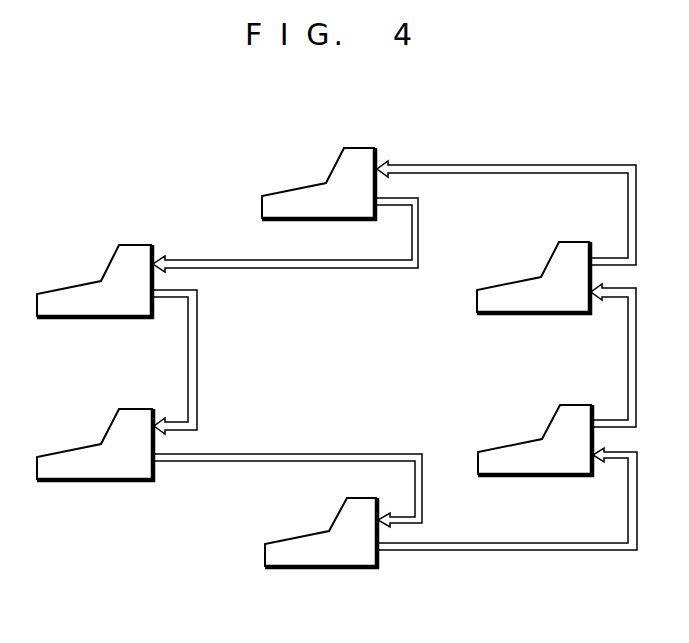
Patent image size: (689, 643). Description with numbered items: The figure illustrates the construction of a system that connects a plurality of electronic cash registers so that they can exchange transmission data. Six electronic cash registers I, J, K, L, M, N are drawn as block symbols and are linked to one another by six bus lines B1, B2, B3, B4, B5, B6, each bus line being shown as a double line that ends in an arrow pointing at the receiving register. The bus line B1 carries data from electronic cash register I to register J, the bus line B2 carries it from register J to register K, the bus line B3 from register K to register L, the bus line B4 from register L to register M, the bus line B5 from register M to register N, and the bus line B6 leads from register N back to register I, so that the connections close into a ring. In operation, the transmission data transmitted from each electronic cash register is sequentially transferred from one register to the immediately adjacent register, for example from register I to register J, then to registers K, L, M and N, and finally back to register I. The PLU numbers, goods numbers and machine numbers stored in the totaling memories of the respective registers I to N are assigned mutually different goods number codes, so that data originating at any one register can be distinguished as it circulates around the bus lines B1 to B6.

The electronic cash register I is at (323, 560).
The electronic cash register J is at (558, 468).
The electronic cash register K is at (539, 306).
The electronic cash register L is at (327, 212).
The electronic cash register M is at (103, 310).
The electronic cash register N is at (100, 473).
The bus line B1 is at (478, 551).
The bus line B2 is at (628, 378).
The bus line B3 is at (503, 174).
The bus line B4 is at (293, 269).
The bus line B5 is at (198, 393).
The bus line B6 is at (254, 462).